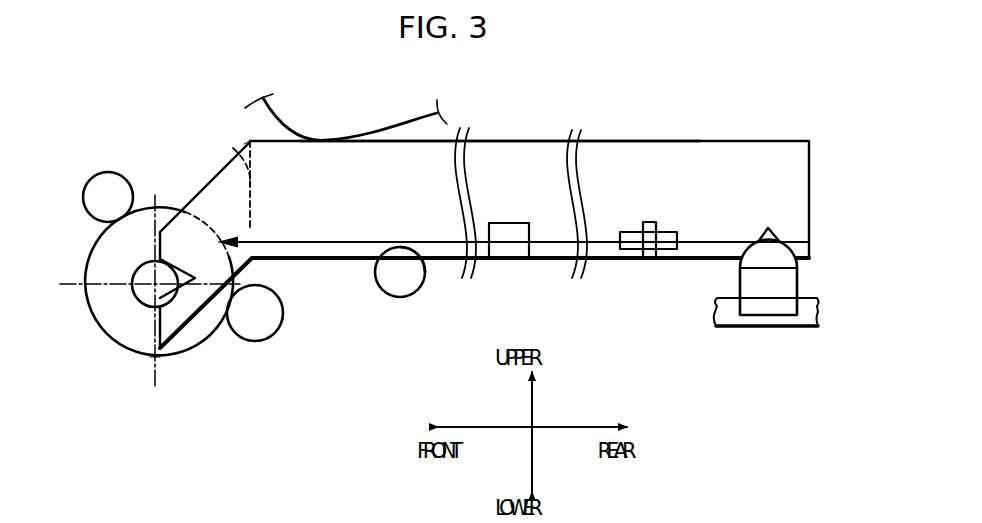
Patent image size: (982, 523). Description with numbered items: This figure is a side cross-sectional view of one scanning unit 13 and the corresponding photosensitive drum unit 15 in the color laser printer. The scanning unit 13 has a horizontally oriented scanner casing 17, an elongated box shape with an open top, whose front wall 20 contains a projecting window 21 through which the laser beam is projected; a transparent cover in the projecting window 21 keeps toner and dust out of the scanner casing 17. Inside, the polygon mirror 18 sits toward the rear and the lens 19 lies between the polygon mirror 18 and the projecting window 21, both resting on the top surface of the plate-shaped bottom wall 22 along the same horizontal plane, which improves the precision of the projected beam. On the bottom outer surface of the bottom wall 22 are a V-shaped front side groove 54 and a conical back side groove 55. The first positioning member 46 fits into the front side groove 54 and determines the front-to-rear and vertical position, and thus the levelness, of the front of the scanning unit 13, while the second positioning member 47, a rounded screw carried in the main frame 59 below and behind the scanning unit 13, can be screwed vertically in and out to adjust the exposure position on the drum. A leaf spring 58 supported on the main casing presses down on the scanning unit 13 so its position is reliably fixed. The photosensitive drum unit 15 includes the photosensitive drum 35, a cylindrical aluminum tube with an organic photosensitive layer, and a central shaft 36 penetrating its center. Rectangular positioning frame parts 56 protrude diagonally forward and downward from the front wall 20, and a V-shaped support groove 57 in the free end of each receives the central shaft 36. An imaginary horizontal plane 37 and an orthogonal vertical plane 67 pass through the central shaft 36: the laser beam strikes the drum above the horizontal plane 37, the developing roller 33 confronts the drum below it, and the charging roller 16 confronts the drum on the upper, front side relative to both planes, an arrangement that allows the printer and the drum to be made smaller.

The scanning unit 13 is at (708, 136).
The photosensitive drum unit 15 is at (139, 366).
The charging roller 16 is at (99, 176).
The scanner casing 17 is at (628, 140).
The polygon mirror 18 is at (668, 232).
The lens 19 is at (507, 223).
The front wall 20 is at (244, 148).
The projecting window 21 is at (245, 216).
The bottom wall 22 is at (338, 260).
The developing roller 33 is at (284, 319).
The photosensitive drum 35 is at (192, 350).
The central shaft 36 is at (138, 303).
The horizontal plane 37 is at (101, 286).
The first positioning member 46 is at (398, 298).
The second positioning member 47 is at (739, 280).
The front side groove 54 is at (423, 268).
The back side groove 55 is at (758, 237).
The positioning frame part 56 is at (202, 190).
The support groove 57 is at (185, 270).
The leaf spring 58 is at (264, 118).
The main frame 59 is at (768, 327).
The vertical plane 67 is at (154, 196).